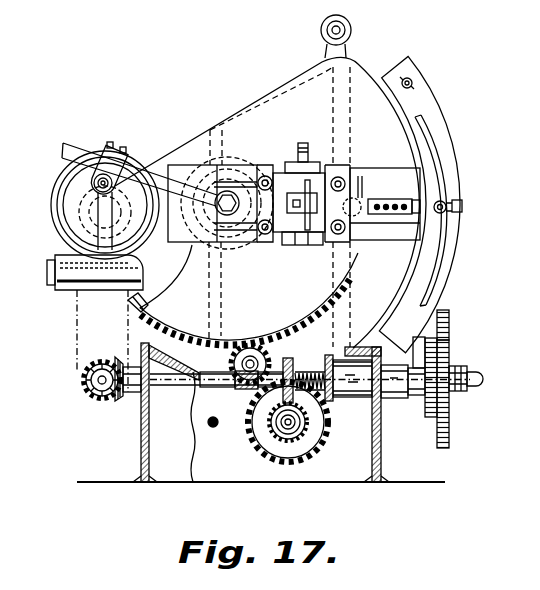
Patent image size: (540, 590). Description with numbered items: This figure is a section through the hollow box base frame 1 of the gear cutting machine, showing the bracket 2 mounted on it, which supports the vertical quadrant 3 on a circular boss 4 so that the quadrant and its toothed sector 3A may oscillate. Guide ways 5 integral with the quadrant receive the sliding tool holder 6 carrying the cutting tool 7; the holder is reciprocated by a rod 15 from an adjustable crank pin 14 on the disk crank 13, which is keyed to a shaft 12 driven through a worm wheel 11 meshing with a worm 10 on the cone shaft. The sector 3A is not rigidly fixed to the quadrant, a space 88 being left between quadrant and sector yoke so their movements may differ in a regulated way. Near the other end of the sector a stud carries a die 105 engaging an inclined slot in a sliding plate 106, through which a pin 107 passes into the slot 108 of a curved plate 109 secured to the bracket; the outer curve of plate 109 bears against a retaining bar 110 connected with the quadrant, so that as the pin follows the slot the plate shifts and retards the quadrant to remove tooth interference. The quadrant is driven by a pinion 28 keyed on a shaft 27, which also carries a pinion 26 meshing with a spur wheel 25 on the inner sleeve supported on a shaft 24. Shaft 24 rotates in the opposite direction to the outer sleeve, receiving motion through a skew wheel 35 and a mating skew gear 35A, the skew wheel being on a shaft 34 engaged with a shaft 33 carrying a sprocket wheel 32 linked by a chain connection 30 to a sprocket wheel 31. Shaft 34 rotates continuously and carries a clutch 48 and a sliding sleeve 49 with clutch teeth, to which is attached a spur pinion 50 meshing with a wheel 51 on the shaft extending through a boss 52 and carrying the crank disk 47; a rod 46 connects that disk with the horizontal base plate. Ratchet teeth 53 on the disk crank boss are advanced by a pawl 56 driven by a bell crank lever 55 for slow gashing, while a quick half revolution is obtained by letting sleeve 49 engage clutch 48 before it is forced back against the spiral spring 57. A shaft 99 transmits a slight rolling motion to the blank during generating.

The box base frame 1 is at (140, 448).
The bracket 2 is at (267, 181).
The vertical quadrant 3 is at (249, 296).
The toothed sector 3A is at (338, 288).
The circular boss 4 is at (233, 172).
The guide ways 5 is at (395, 172).
The sliding tool holder 6 is at (312, 237).
The cutting tool 7 is at (271, 242).
The worm 10 is at (67, 252).
The worm wheel 11 is at (62, 211).
The shaft 12 is at (125, 165).
The disk crank 13 is at (62, 193).
The adjustable crank pin 14 is at (63, 178).
The rod 15 is at (78, 150).
The shaft 24 is at (294, 430).
The spur wheel 25 is at (326, 451).
The pinion 26 is at (196, 381).
The shaft 27 is at (248, 384).
The pinion 28 is at (232, 373).
The chain connection 30 is at (77, 330).
The sprocket wheel 31 is at (78, 205).
The sprocket wheel 32 is at (88, 397).
The shaft 33 is at (80, 382).
The shaft 34 is at (200, 388).
The skew wheel 35 is at (277, 347).
The skew gear 35A is at (270, 430).
The rod 46 is at (470, 375).
The crank disk 47 is at (449, 427).
The clutch 48 is at (388, 402).
The sliding sleeve 49 is at (330, 407).
The spur pinion 50 is at (318, 348).
The wheel 51 is at (333, 392).
The boss 52 is at (386, 398).
The ratchet teeth 53 is at (432, 388).
The bell crank lever 55 is at (427, 353).
The pawl 56 is at (449, 335).
The spiral spring 57 is at (323, 362).
The space 88 is at (125, 307).
The shaft 99 is at (211, 431).
The die 105 is at (358, 190).
The plate 106 is at (403, 222).
The pin 107 is at (446, 212).
The slot 108 is at (436, 258).
The curved plate 109 is at (433, 122).
The retaining bar 110 is at (462, 207).